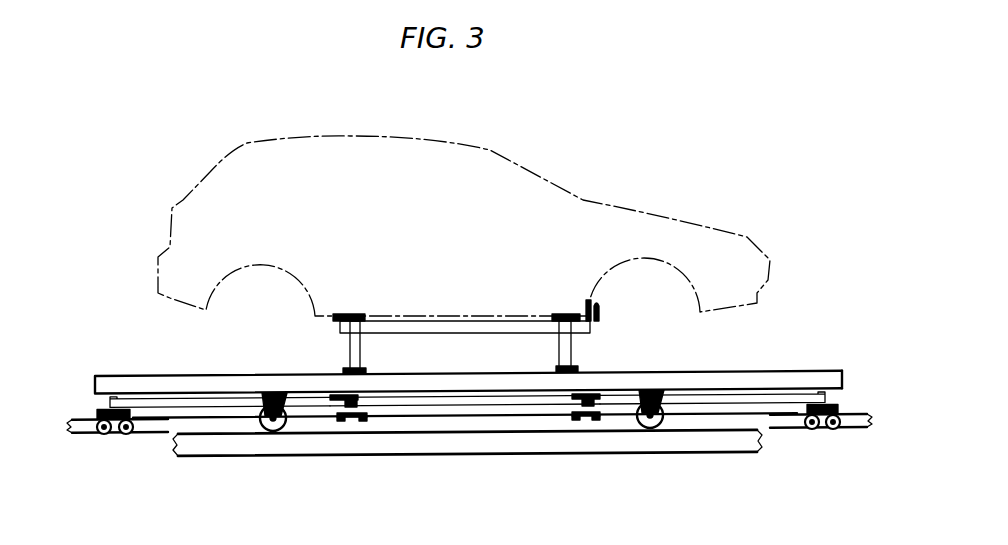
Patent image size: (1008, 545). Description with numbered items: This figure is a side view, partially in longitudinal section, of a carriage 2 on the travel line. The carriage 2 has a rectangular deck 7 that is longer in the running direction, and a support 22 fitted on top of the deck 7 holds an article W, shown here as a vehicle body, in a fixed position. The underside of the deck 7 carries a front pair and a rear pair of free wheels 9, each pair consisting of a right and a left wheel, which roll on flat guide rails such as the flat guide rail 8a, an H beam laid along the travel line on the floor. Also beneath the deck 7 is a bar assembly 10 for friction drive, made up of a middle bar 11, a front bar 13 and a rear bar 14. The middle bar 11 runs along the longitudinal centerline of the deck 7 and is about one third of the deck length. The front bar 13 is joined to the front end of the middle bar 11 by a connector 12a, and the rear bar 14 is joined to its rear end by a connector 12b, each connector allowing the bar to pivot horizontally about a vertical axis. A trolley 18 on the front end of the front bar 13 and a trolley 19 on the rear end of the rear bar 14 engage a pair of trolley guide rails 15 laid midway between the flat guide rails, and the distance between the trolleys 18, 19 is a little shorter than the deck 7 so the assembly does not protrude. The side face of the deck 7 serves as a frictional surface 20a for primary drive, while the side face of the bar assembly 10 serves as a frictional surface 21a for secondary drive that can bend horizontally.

The article W is at (513, 197).
The carriage 2 is at (142, 375).
The rectangular deck 7 is at (762, 380).
The flat guide rail 8a is at (607, 431).
The free wheels 9 is at (293, 422).
The bar assembly 10 is at (435, 410).
The middle bar 11 is at (482, 398).
The connector 12a is at (596, 391).
The connector 12b is at (341, 392).
The front bar 13 is at (710, 400).
The rear bar 14 is at (220, 403).
The trolley guide rails 15 is at (152, 432).
The trolley 18 is at (822, 430).
The trolley 19 is at (112, 437).
The frictional surface 20a is at (444, 385).
The frictional surface 21a is at (520, 400).
The support 22 is at (353, 313).